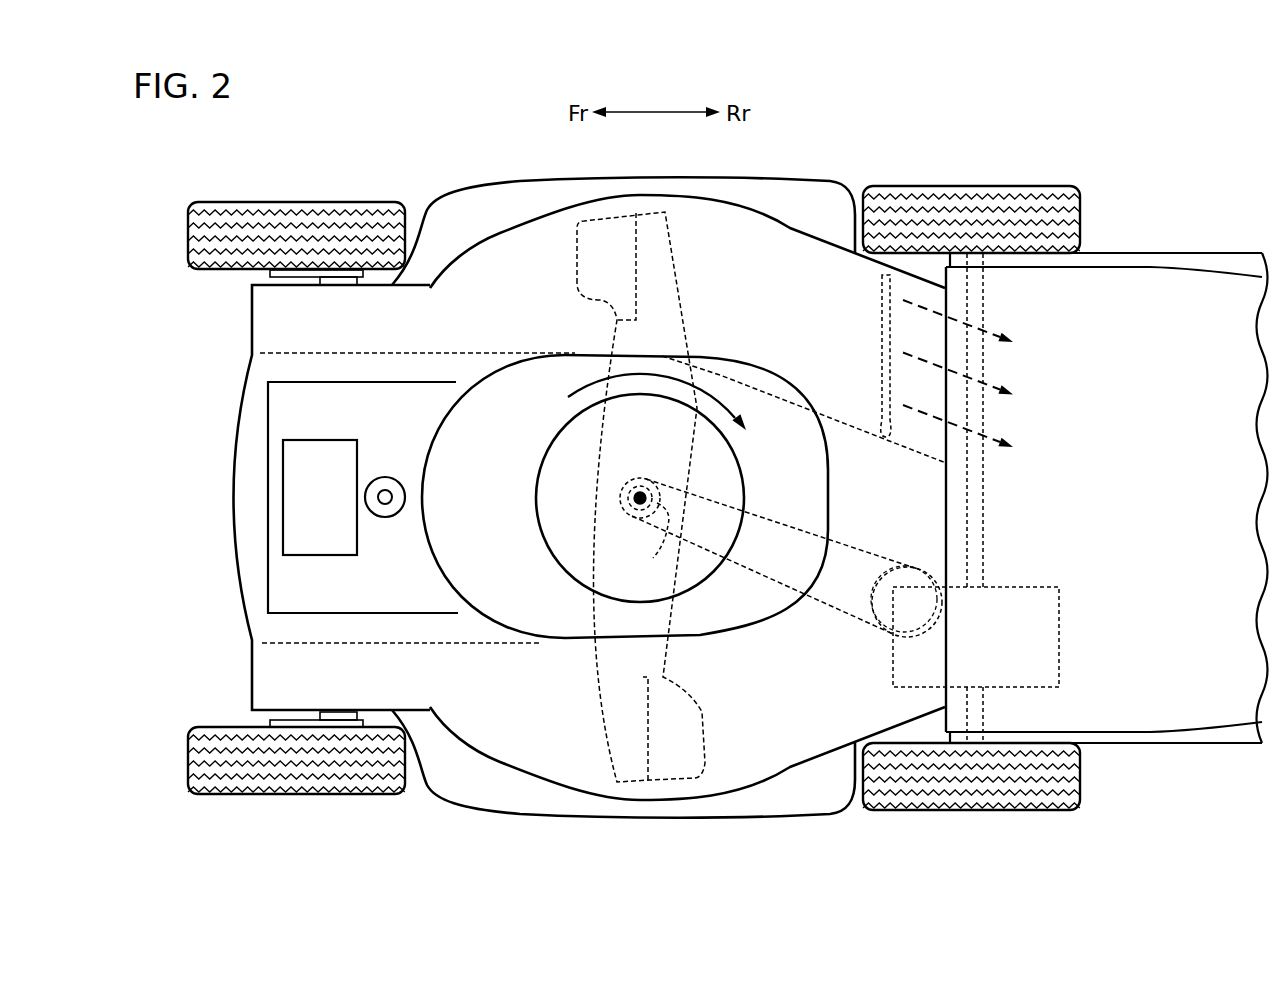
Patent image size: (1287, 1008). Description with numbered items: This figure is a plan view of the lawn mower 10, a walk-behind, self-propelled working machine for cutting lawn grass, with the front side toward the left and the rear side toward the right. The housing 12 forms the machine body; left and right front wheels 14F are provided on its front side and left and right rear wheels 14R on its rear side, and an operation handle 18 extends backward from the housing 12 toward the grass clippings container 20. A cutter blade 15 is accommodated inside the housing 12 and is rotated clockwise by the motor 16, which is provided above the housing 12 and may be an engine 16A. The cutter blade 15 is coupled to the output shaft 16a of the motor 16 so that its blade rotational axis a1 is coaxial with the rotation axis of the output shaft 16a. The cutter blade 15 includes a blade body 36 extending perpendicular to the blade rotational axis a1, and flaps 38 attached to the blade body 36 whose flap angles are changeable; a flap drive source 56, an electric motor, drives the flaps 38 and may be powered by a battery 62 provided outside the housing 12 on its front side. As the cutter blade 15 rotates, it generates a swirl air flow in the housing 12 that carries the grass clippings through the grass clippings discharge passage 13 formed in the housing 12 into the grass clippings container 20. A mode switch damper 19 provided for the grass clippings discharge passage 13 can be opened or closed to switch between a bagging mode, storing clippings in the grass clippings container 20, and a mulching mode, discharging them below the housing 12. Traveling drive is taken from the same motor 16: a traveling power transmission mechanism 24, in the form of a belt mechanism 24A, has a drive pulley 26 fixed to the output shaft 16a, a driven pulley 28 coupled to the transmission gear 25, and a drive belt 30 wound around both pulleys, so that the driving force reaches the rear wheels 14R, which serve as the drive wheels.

The lawn mower 10 is at (360, 125).
The housing 12 is at (497, 222).
The grass clippings discharge passage 13 is at (855, 429).
The front wheels 14F is at (263, 202).
The rear wheels 14R is at (966, 188).
The cutter blade 15 is at (639, 497).
The motor 16 is at (625, 496).
The engine 16A is at (530, 478).
The output shaft 16a is at (653, 479).
The blade rotational axis a1 is at (639, 493).
The operation handle 18 is at (1213, 733).
The mode switch damper 19 is at (880, 352).
The grass clippings container 20 is at (1172, 290).
The traveling power transmission mechanism 24 is at (762, 598).
The belt mechanism 24A is at (831, 620).
The transmission gear 25 is at (1059, 620).
The drive pulley 26 is at (648, 544).
The driven pulley 28 is at (885, 572).
The drive belt 30 is at (788, 522).
The blade body 36 is at (627, 657).
The flaps 38 is at (592, 268).
The flap drive source 56 is at (385, 477).
The battery 62 is at (345, 440).